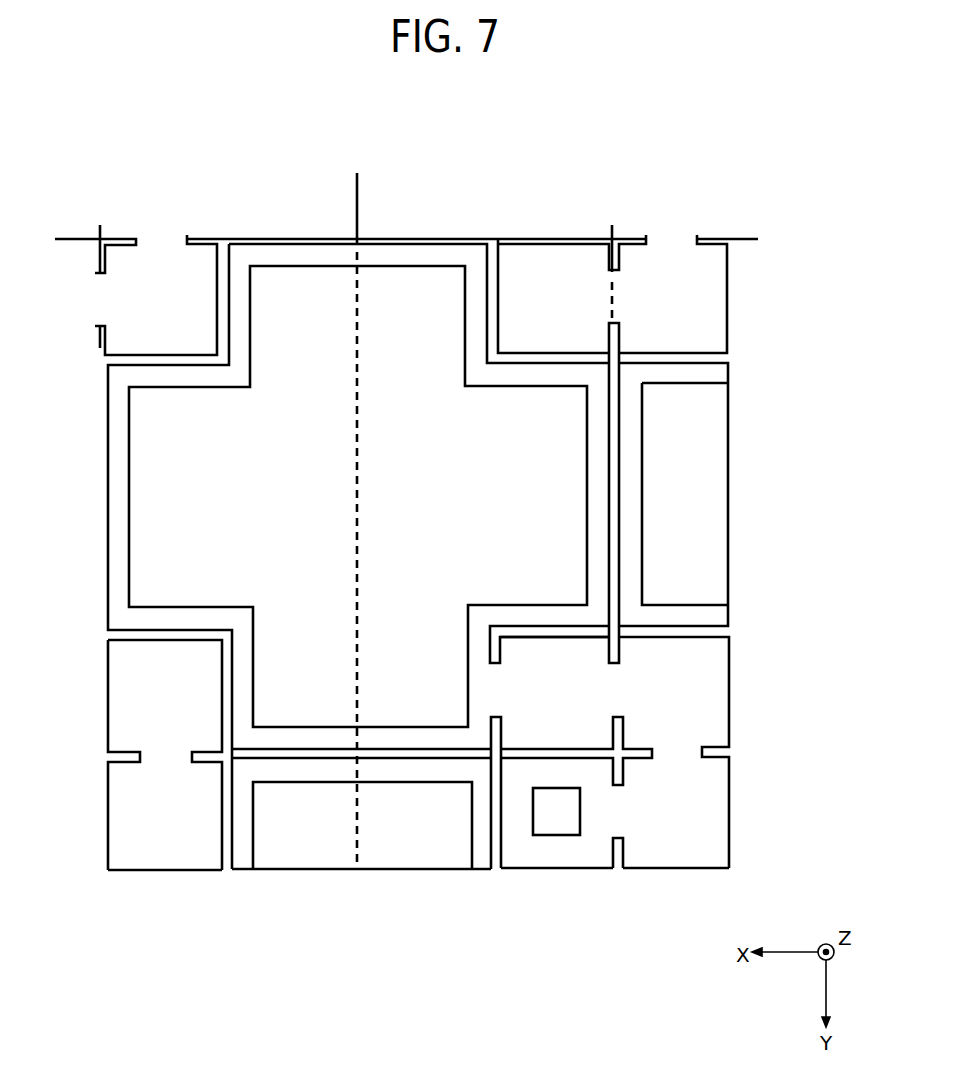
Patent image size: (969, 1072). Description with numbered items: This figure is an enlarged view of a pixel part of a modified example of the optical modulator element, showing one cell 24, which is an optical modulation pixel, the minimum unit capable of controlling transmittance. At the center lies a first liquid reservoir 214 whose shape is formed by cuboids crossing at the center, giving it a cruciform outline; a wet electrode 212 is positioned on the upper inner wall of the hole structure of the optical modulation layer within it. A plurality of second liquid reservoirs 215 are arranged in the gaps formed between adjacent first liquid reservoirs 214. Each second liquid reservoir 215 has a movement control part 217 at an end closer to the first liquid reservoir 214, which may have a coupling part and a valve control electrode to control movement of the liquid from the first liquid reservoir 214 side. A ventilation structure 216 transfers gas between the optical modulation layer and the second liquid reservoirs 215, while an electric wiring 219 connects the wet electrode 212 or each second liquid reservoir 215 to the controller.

The cell 24 is at (705, 157).
The wet electrode 212 is at (252, 345).
The first liquid reservoir 214 is at (412, 240).
The second liquid reservoir 215 is at (727, 291).
The ventilation structure 216 is at (580, 811).
The movement control part 217 is at (502, 688).
The electric wiring 219 is at (614, 233).